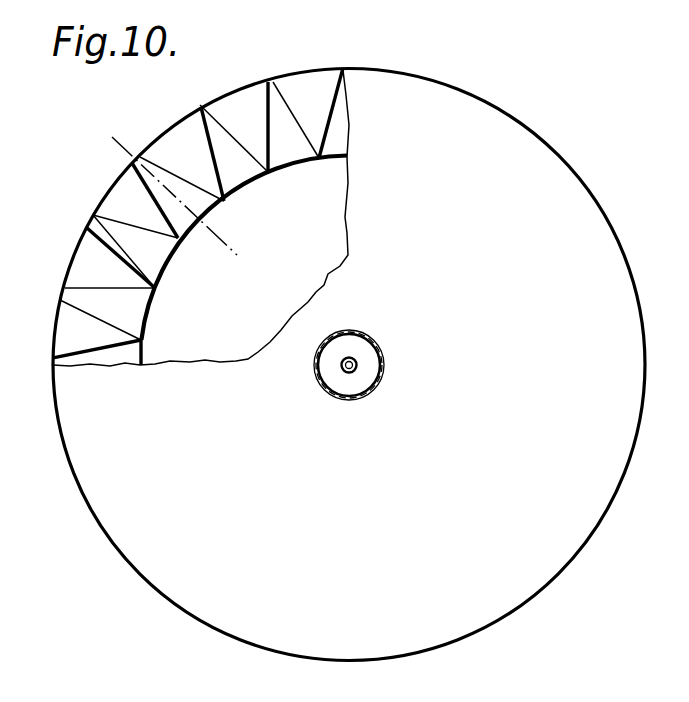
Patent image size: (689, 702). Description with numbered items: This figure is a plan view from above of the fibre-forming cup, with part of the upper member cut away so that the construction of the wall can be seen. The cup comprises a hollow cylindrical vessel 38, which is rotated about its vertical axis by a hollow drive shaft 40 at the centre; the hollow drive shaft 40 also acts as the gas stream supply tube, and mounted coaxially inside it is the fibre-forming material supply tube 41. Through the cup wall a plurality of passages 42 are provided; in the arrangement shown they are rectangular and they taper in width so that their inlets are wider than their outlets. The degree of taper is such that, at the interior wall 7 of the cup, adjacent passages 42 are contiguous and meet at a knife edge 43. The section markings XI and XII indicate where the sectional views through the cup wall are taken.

The hollow cylindrical vessel 38 is at (308, 80).
The interior wall 7 is at (307, 163).
The knife edge 43 is at (144, 343).
The passages 42 is at (65, 293).
The hollow drive shaft 40 is at (383, 367).
The fibre-forming material supply tube 41 is at (355, 361).
The section line XI- XI is at (112, 137).
The section line XII- XII is at (229, 227).